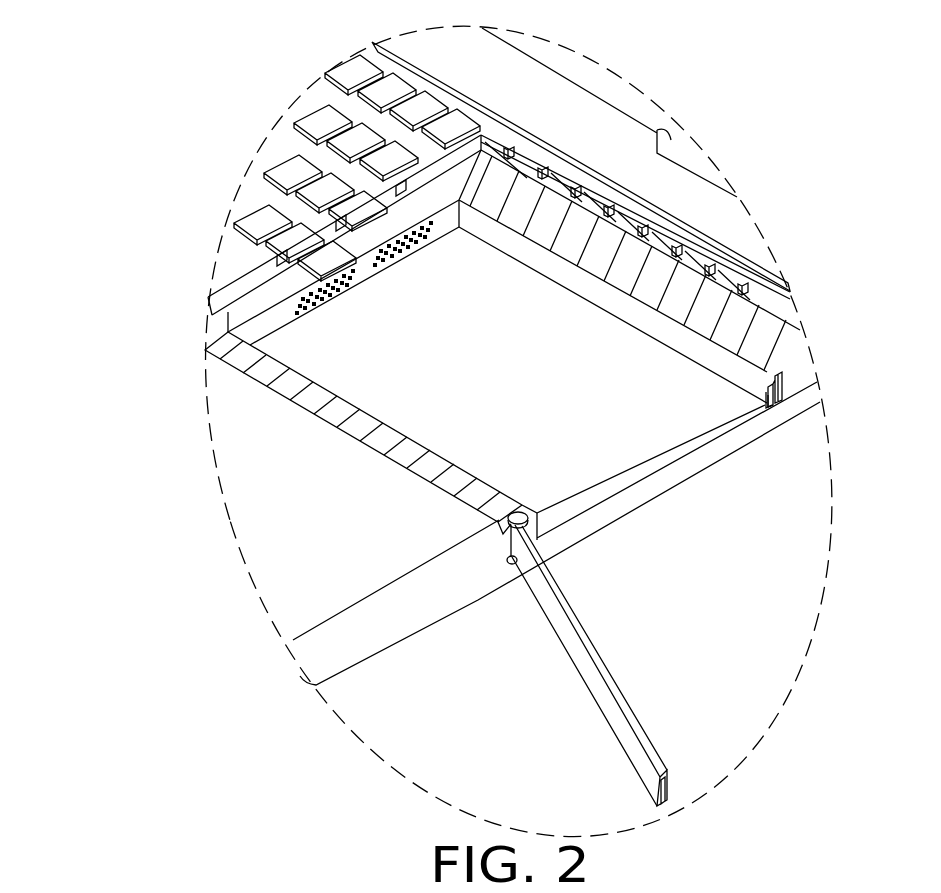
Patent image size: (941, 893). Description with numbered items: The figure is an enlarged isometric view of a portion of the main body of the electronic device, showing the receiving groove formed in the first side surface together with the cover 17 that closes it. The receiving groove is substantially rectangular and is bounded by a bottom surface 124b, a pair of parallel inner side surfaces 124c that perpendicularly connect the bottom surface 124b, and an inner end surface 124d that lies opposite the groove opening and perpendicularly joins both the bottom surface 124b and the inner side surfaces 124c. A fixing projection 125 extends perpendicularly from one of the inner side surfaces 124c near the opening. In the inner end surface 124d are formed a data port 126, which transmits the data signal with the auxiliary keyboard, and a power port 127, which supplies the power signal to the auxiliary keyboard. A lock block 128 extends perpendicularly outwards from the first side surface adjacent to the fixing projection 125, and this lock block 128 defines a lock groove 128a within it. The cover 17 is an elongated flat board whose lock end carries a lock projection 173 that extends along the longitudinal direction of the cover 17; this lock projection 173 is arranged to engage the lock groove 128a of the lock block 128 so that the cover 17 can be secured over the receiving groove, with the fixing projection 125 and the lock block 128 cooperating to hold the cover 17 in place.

The cover 17 is at (570, 640).
The lock projection 173 is at (668, 790).
The bottom surface 124b is at (623, 458).
The inner side surfaces 124c is at (683, 340).
The inner end surface 124d is at (275, 313).
The fixing projection 125 is at (768, 410).
The data port 126 is at (290, 295).
The power port 127 is at (420, 233).
The lock block 128 is at (784, 390).
The lock groove 128a is at (777, 407).